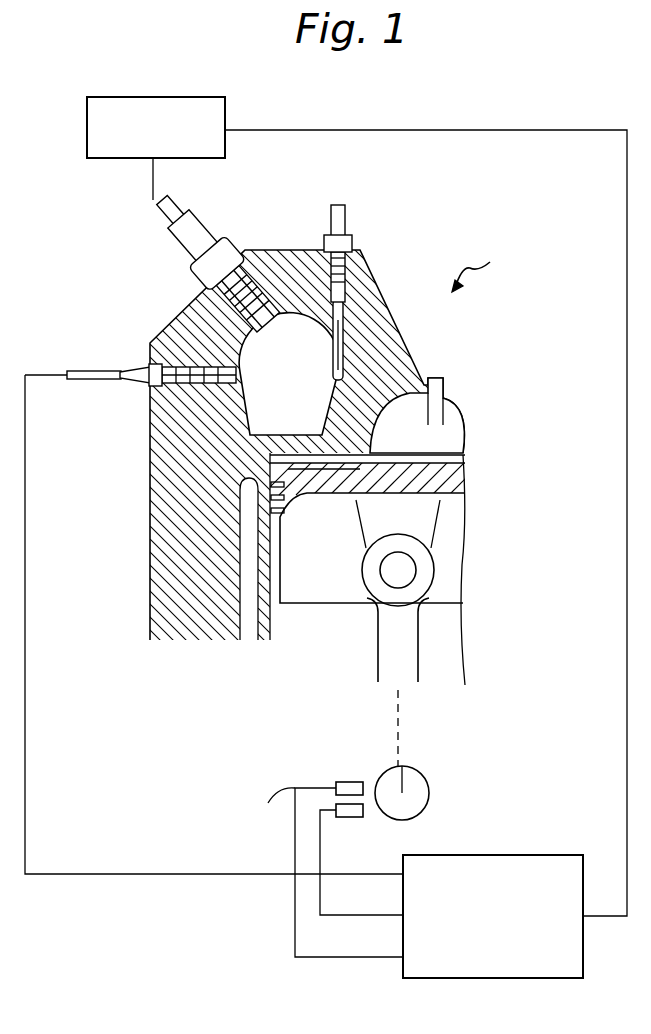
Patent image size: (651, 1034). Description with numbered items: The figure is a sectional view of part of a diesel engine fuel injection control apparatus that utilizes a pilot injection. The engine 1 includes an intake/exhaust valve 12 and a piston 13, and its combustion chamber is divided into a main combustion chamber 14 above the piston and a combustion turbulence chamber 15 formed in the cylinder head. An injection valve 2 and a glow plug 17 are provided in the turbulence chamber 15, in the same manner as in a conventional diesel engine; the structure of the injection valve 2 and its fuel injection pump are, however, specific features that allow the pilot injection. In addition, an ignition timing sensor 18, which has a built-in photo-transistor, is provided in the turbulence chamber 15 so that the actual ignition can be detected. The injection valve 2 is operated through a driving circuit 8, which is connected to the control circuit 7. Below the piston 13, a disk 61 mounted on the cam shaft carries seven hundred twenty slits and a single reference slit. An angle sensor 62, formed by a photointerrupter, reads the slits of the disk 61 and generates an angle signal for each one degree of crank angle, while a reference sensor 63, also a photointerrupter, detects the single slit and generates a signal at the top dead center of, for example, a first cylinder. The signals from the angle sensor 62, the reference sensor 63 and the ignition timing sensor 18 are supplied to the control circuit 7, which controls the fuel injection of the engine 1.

The engine 1 is at (325, 450).
The injection valve 2 is at (200, 234).
The control circuit 7 is at (540, 855).
The driving circuit 8 is at (226, 108).
The intake/exhaust valve 12 is at (450, 450).
The piston 13 is at (456, 480).
The main combustion chamber 14 is at (262, 466).
The combustion turbulence chamber 15 is at (250, 407).
The glow plug 17 is at (348, 218).
The ignition timing sensor 18 is at (122, 380).
The disk 61 is at (424, 778).
The angle sensor 62 is at (349, 817).
The reference sensor 63 is at (348, 782).